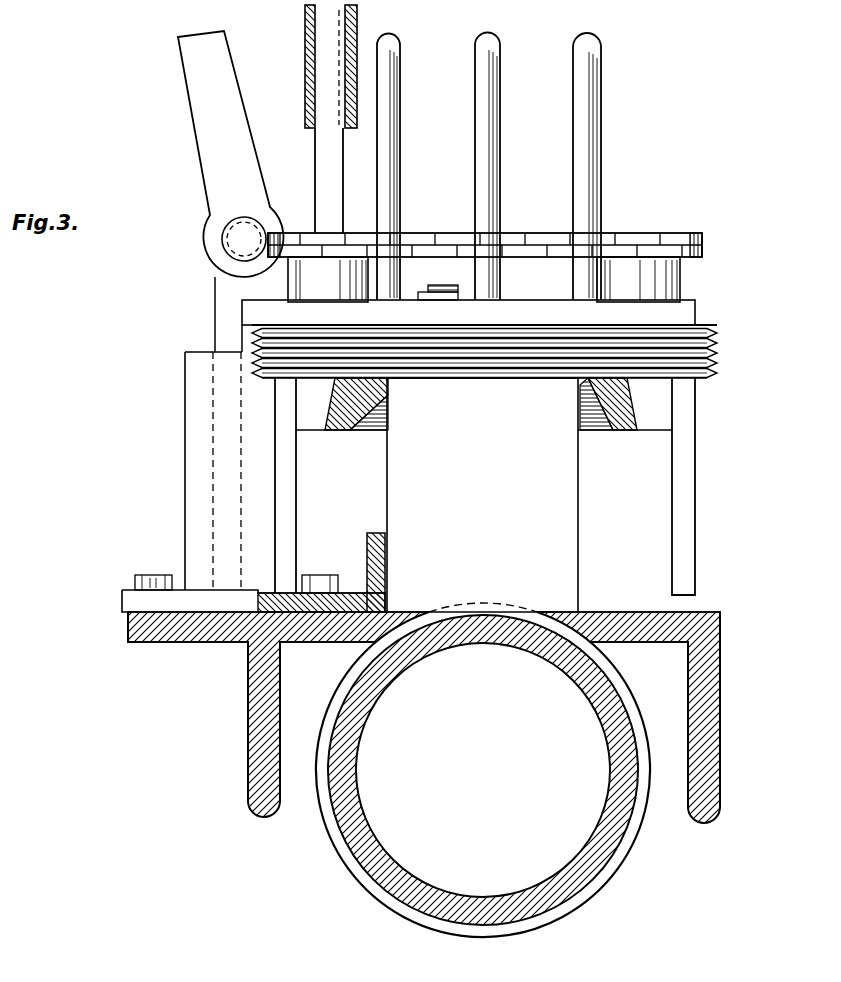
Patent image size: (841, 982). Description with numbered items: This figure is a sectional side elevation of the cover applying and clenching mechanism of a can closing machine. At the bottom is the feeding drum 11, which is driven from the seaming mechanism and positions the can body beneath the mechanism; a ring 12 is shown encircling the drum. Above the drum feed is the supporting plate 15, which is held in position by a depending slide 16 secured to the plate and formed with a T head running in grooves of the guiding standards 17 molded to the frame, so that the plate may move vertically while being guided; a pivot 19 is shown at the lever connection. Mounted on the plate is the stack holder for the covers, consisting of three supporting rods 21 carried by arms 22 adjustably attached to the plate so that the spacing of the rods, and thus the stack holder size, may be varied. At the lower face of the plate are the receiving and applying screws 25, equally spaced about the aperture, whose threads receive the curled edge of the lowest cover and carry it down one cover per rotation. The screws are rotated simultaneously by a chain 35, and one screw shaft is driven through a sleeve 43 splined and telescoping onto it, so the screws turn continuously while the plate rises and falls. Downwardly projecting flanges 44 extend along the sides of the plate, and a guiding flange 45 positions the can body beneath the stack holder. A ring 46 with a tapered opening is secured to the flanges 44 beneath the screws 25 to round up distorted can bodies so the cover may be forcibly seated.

The drum 11 is at (545, 893).
The outer ring band 12 is at (618, 853).
The supporting plate 15 is at (313, 290).
The depending slide 16 is at (222, 332).
The guiding standards 17 is at (198, 428).
The lever pivot 19 is at (213, 271).
The supporting rods 21 is at (400, 140).
The arms 22 is at (445, 300).
The receiving and applying screws 25 is at (262, 354).
The chain 35 is at (526, 240).
The sleeve 43 is at (305, 77).
The flanges 44 is at (282, 523).
The guiding flange 45 is at (367, 548).
The ring 46 is at (612, 432).